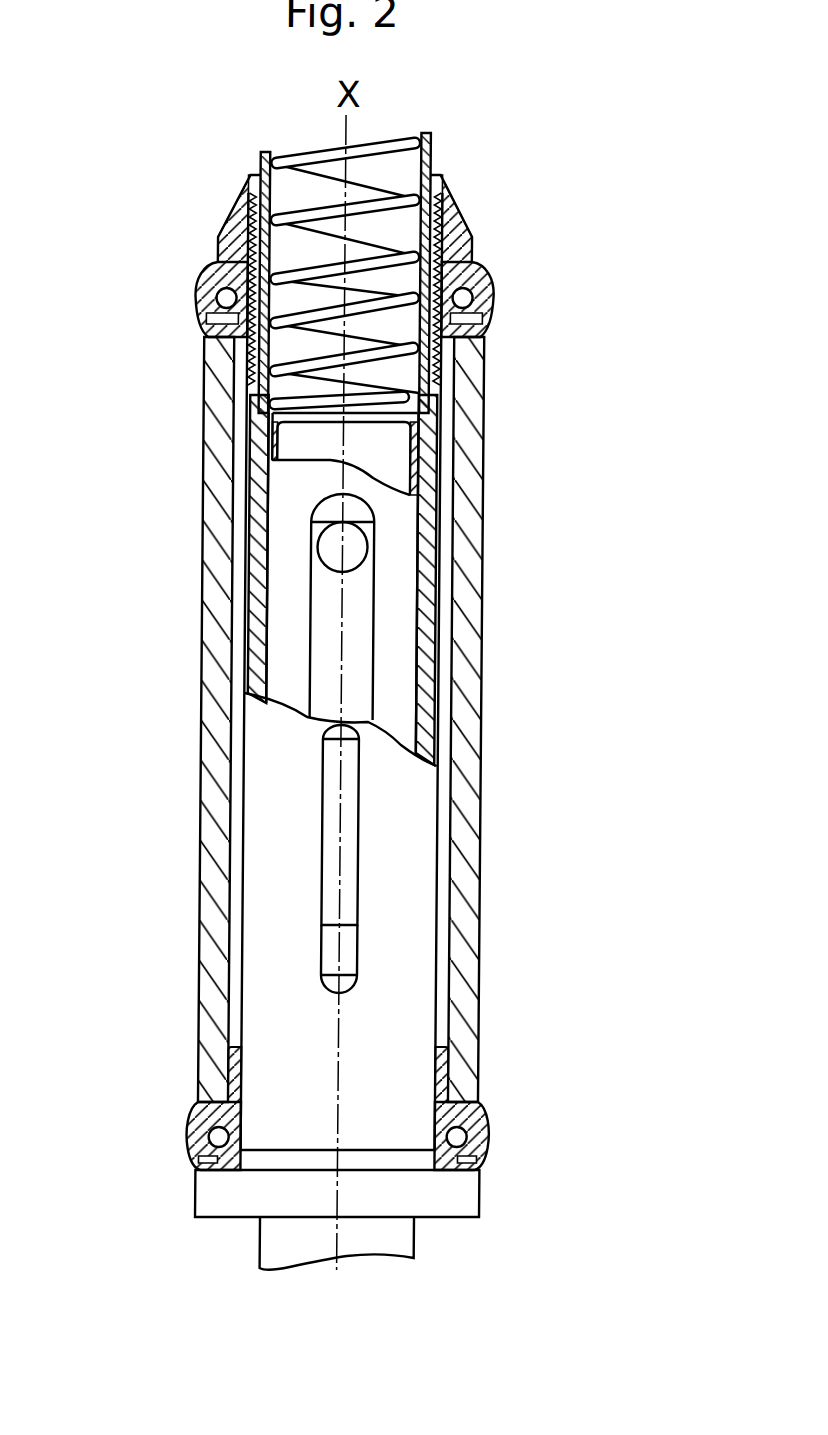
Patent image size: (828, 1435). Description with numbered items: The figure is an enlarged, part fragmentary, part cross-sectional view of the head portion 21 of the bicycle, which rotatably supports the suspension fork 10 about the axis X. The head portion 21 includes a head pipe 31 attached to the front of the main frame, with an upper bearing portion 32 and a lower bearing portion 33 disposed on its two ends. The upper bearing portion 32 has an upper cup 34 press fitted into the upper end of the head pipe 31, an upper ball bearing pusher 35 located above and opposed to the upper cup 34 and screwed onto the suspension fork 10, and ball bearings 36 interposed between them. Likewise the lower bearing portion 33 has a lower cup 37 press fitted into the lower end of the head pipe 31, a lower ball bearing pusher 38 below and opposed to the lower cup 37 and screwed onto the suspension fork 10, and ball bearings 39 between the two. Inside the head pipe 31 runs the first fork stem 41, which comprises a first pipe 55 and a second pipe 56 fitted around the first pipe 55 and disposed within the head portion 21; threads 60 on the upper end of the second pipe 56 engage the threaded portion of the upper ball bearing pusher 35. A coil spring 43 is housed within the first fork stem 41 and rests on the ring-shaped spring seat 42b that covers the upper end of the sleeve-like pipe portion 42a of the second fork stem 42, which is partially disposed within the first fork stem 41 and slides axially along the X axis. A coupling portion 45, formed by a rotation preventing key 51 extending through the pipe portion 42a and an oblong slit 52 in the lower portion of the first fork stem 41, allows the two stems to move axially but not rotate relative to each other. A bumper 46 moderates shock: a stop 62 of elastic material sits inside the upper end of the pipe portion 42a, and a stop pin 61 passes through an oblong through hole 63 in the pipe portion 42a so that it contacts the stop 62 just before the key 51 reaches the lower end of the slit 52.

The suspension fork 10 is at (398, 269).
The head portion 21 is at (393, 692).
The head pipe 31 is at (391, 671).
The upper bearing portion 32 is at (423, 270).
The lower bearing portion 33 is at (424, 1158).
The upper cup 34 is at (383, 314).
The upper ball bearing pusher 35 is at (393, 229).
The ball bearings 36 is at (391, 300).
The lower cup 37 is at (398, 1131).
The lower ball bearing pusher 38 is at (386, 1186).
The ball bearings 39 is at (408, 1084).
The first fork stem 41 is at (452, 580).
The second fork stem 42 is at (474, 434).
The pipe portion 42a is at (437, 453).
The spring seat 42b is at (437, 434).
The coil spring 43 is at (412, 273).
The coupling portion 45 is at (488, 859).
The bumper 46 is at (230, 580).
The rotation preventing key 51 is at (454, 947).
The slit 52 is at (454, 825).
The first pipe 55 is at (418, 580).
The second pipe 56 is at (416, 589).
The threads 60 is at (390, 218).
The stop pin 61 is at (243, 541).
The stop 62 is at (265, 469).
The through hole 63 is at (246, 607).